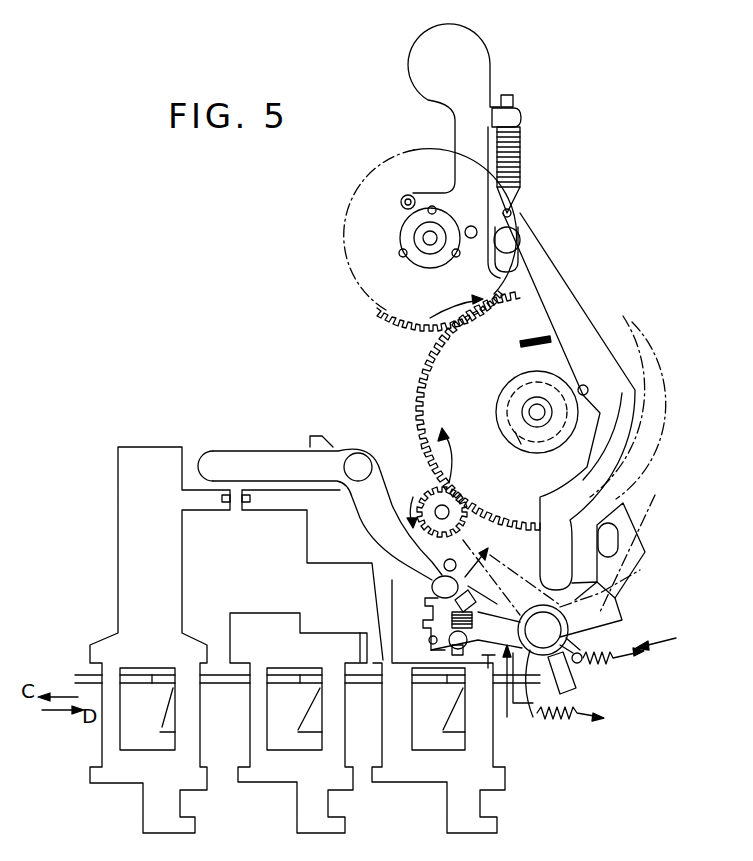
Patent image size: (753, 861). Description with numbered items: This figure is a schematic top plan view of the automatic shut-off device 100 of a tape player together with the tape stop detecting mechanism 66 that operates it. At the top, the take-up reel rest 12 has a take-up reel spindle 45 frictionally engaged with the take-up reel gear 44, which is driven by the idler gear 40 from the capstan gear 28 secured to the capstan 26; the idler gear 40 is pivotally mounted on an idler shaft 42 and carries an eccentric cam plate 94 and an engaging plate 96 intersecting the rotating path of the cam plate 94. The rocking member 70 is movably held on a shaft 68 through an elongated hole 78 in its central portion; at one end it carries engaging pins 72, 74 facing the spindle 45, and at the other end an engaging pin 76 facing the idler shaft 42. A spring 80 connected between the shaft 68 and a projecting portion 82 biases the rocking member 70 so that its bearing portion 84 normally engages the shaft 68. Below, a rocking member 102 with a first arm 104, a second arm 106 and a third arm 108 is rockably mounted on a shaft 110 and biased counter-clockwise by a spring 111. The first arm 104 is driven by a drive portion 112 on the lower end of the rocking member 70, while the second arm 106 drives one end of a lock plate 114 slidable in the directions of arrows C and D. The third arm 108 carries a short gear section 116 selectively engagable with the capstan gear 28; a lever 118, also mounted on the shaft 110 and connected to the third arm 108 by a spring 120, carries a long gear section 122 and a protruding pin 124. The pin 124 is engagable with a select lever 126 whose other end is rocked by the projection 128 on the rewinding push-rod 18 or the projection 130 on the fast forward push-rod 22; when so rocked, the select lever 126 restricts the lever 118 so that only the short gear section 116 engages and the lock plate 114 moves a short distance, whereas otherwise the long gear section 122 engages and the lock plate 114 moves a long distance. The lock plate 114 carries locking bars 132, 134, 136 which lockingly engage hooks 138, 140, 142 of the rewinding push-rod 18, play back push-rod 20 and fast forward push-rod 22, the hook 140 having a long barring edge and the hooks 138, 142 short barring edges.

The take-up reel rest 12 is at (352, 185).
The rewinding push-rod 18 is at (127, 775).
The play back push-rod 20 is at (278, 777).
The fast forward push-rod 22 is at (432, 775).
The capstan 26 is at (437, 506).
The capstan gear 28 is at (449, 485).
The idler gear 40 is at (430, 368).
The idler shaft 42 is at (533, 411).
The take-up reel gear 44 is at (365, 283).
The take-up reel spindle 45 is at (402, 244).
The tape stop detecting mechanism 66 is at (588, 231).
The shaft 68 is at (517, 238).
The rocking member 70 is at (560, 289).
The engaging pin 72 is at (470, 226).
The engaging pin 74 is at (413, 195).
The engaging pin 76 is at (588, 390).
The elongated hole 78 is at (513, 262).
The spring 80 is at (522, 158).
The projecting portion 82 is at (487, 71).
The bearing portion 84 is at (516, 206).
The cam plate 94 is at (518, 440).
The engaging plate 96 is at (522, 346).
The automatic shut-off device 100 is at (675, 637).
The rocking member 102 is at (523, 700).
The first arm 104 is at (640, 527).
The second arm 106 is at (572, 686).
The third arm 108 is at (492, 601).
The shaft 110 is at (545, 705).
The spring 111 is at (617, 663).
The drive portion 112 is at (468, 583).
The lock plate 114 is at (239, 683).
The short gear section 116 is at (492, 562).
The lever 118 is at (425, 613).
The spring 120 is at (476, 622).
The long gear section 122 is at (425, 592).
The protruding pin 124 is at (428, 639).
The select lever 126 is at (290, 447).
The projection 128 is at (222, 500).
The projection 130 is at (252, 500).
The locking bar 132 is at (168, 688).
The locking bar 134 is at (312, 690).
The locking bar 136 is at (457, 690).
The hook 138 is at (167, 722).
The hook 140 is at (297, 732).
The hook 142 is at (442, 732).